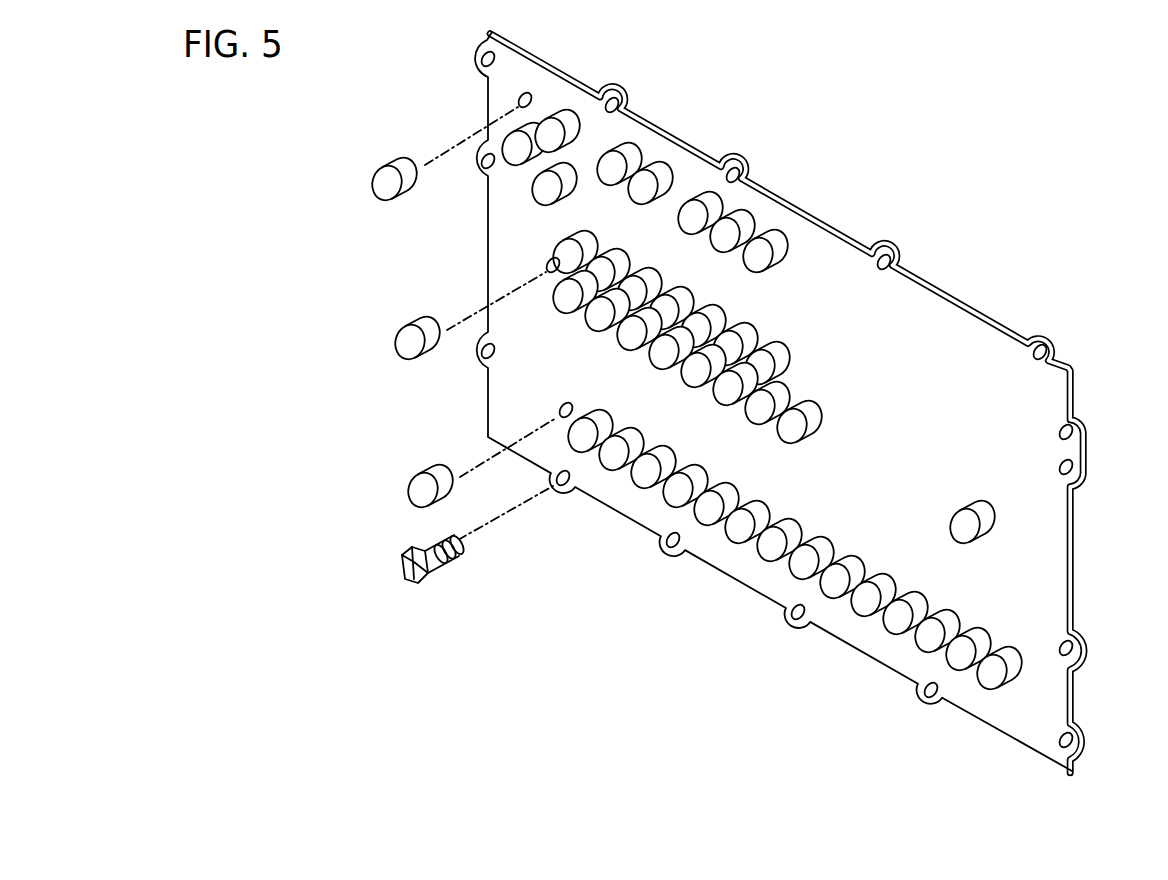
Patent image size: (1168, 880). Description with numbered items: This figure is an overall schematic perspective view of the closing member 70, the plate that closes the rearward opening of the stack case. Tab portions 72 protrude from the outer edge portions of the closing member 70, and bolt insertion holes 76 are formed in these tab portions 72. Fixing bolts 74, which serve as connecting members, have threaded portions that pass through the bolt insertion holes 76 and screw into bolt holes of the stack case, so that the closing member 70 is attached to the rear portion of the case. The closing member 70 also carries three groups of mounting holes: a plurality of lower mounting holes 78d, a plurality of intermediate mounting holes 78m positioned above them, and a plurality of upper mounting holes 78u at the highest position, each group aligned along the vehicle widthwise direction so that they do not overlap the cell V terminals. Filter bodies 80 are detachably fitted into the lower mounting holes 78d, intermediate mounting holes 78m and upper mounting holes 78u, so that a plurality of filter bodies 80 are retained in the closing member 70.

The closing member 70 is at (953, 325).
The tab portions 72 is at (622, 97).
The fixing bolts 74 is at (412, 581).
The bolt insertion holes 76 is at (481, 56).
The upper mounting holes 78u is at (519, 100).
The intermediate mounting holes 78m is at (548, 264).
The lower mounting holes 78d is at (566, 400).
The filter bodies 80 is at (368, 174).